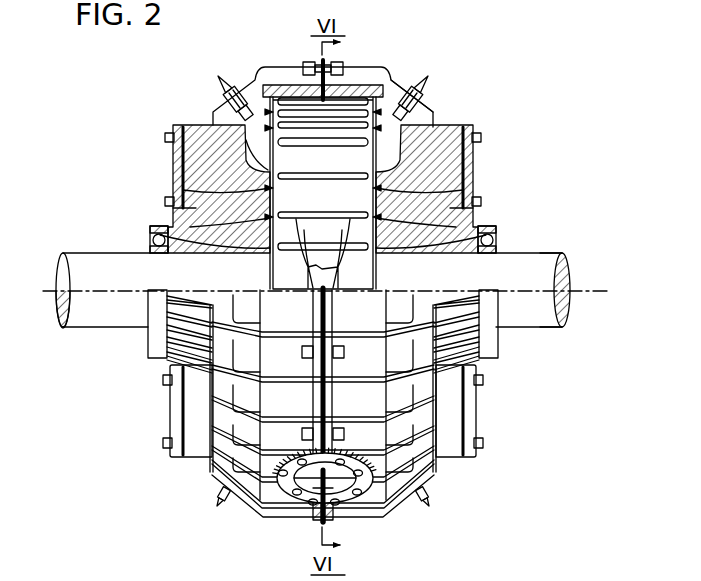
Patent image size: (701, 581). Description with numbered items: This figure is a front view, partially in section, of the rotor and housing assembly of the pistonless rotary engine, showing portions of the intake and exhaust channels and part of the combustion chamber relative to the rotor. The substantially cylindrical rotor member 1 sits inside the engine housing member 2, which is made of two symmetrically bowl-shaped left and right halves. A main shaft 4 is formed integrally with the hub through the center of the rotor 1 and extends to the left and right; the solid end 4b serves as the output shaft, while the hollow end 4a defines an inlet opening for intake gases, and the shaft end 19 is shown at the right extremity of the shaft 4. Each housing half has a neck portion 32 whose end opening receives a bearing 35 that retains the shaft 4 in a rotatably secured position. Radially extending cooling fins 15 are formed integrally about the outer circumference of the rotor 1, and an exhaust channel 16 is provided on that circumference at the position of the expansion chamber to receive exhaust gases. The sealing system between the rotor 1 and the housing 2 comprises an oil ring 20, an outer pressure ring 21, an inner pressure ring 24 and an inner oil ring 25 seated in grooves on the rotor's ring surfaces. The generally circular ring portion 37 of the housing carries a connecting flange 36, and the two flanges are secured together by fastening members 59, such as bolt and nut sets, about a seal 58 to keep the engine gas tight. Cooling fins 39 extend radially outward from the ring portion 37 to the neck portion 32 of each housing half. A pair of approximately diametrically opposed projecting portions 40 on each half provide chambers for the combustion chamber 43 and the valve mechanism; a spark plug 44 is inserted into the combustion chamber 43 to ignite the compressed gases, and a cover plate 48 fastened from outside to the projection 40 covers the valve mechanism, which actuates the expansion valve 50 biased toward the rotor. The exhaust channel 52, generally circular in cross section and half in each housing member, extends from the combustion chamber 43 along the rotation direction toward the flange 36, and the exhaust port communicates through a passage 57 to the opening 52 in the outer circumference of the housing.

The rotor member 1 is at (362, 162).
The engine housing member 2 is at (436, 100).
The main shaft 4 is at (506, 257).
The shaft end 4a is at (555, 310).
The shaft end 4b is at (62, 308).
The cooling fins 15 is at (388, 105).
The exhaust channel 16 is at (318, 267).
The shaft end 19 is at (563, 278).
The oil ring 20 is at (252, 80).
The outer pressure ring 21 is at (268, 112).
The inner pressure ring 24 is at (268, 189).
The inner oil ring 25 is at (268, 217).
The neck portion 32 is at (157, 340).
The bearing 35 is at (150, 240).
The connecting flange 36 is at (307, 73).
The ring portion 37 is at (415, 478).
The cooling fins 39 is at (258, 80).
The projecting portions 40 is at (258, 183).
The combustion chamber 43 is at (255, 153).
The spark plug 44 is at (218, 78).
The cover plate 48 is at (178, 152).
The expansion valve 50 is at (326, 261).
The exhaust channel 52 is at (328, 492).
The passage 57 is at (355, 115).
The seal 58 is at (320, 62).
The fastening members 59 is at (268, 85).